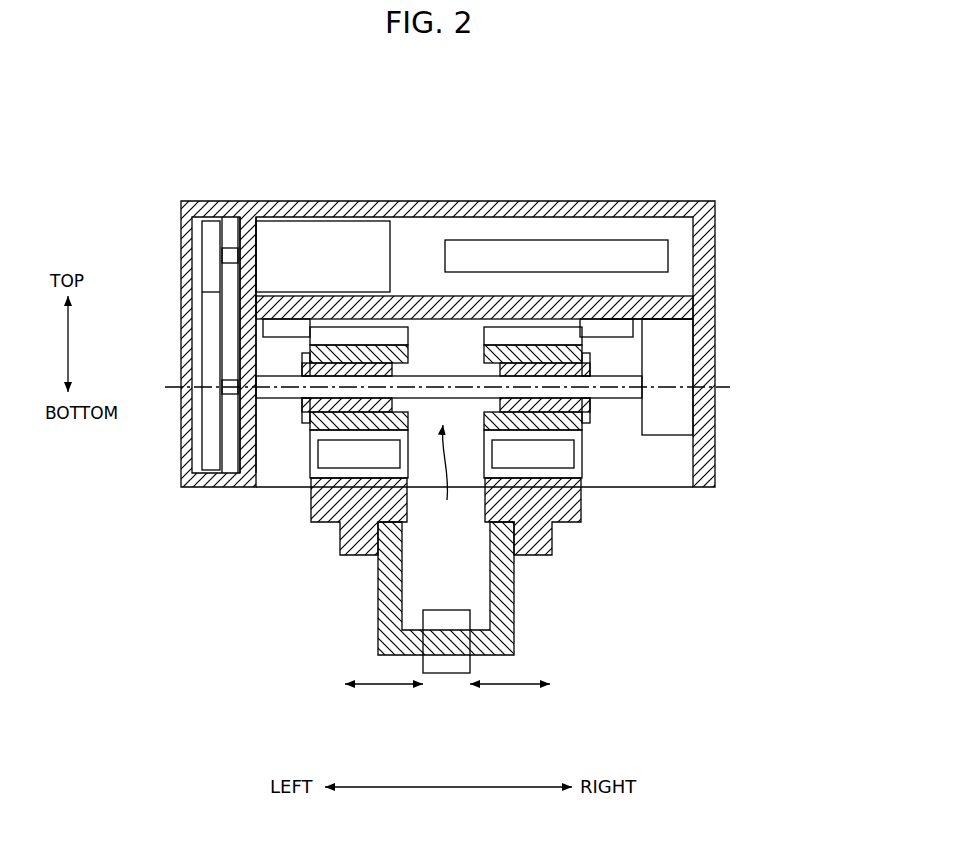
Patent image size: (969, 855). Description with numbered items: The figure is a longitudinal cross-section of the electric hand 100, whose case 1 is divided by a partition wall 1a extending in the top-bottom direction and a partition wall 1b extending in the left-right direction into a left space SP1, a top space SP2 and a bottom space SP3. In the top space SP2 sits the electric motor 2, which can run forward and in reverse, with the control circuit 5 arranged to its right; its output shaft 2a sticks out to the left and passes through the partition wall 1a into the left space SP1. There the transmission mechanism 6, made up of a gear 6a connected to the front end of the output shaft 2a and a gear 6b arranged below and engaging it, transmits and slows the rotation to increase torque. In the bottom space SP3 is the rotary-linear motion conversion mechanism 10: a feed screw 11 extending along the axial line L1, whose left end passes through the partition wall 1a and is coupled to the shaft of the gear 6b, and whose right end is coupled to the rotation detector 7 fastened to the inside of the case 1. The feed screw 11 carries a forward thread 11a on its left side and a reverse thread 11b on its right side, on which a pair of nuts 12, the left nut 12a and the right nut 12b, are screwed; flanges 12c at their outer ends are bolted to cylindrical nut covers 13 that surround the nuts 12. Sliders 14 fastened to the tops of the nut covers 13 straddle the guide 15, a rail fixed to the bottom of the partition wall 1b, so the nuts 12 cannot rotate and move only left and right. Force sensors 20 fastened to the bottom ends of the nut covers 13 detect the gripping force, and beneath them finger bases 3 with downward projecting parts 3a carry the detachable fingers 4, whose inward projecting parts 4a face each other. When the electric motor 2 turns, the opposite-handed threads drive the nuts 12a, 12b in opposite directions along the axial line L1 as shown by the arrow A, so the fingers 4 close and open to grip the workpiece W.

The electric hand 100 is at (632, 128).
The case 1 is at (707, 473).
The partition wall 1a is at (295, 350).
The partition wall 1b is at (470, 296).
The electric motor 2 is at (317, 230).
The output shaft 2a is at (227, 247).
The finger bases 3 is at (367, 555).
The projecting parts 3a is at (338, 535).
The fingers 4 is at (383, 633).
The projecting parts 4a is at (482, 627).
The control circuit 5 is at (573, 250).
The transmission mechanism 6 is at (200, 343).
The gear 6a is at (202, 236).
The gear 6b is at (200, 430).
The rotation detector 7 is at (672, 412).
The rotary-linear motion conversion mechanism 10 is at (449, 479).
The feed screw 11 is at (623, 380).
The thread 11a is at (340, 350).
The thread 11b is at (533, 350).
The nuts 12 is at (480, 427).
The nut 12a is at (303, 407).
The nut 12b is at (588, 363).
The flanges 12c is at (256, 322).
The nut covers 13 is at (312, 430).
The sliders 14 is at (390, 332).
The guide 15 is at (615, 300).
The force sensors 20 is at (317, 470).
The left space SP1 is at (197, 398).
The top space SP2 is at (402, 223).
The bottom space SP3 is at (662, 467).
The axial line L1 is at (460, 388).
The workpiece W is at (442, 675).
The arrow A is at (447, 698).